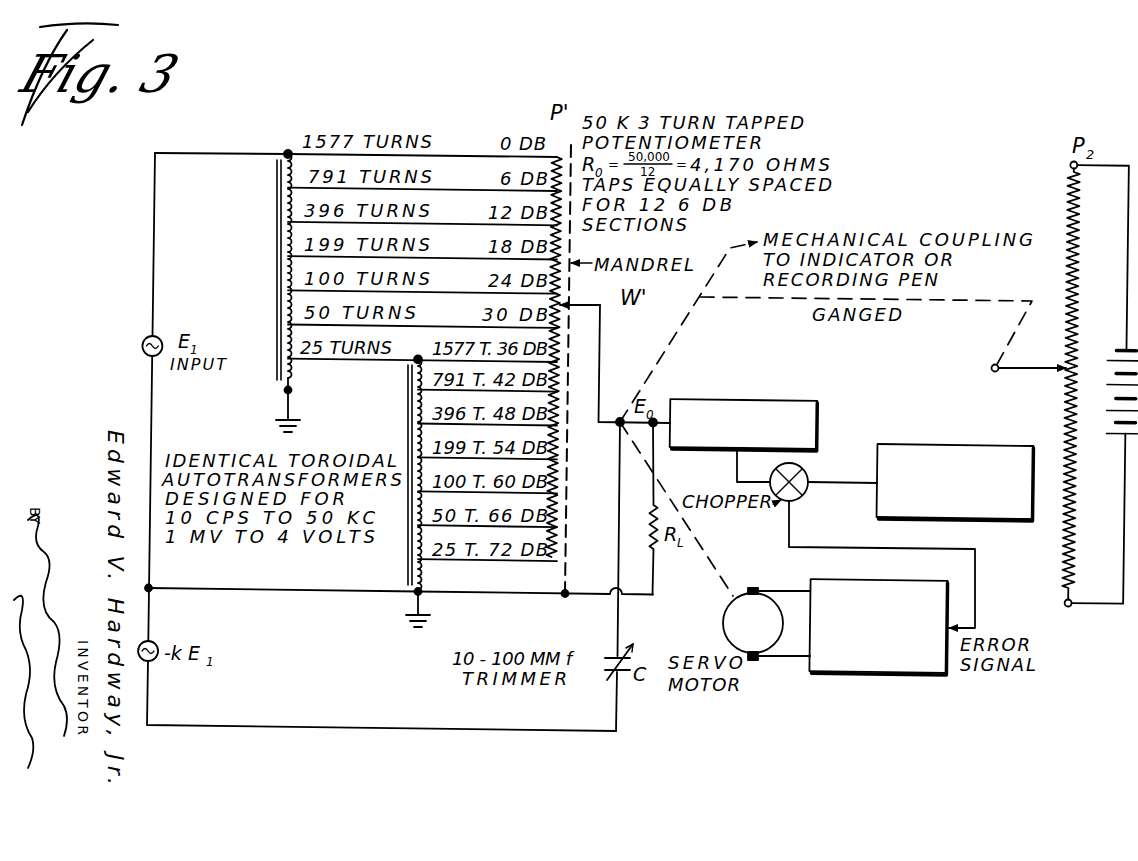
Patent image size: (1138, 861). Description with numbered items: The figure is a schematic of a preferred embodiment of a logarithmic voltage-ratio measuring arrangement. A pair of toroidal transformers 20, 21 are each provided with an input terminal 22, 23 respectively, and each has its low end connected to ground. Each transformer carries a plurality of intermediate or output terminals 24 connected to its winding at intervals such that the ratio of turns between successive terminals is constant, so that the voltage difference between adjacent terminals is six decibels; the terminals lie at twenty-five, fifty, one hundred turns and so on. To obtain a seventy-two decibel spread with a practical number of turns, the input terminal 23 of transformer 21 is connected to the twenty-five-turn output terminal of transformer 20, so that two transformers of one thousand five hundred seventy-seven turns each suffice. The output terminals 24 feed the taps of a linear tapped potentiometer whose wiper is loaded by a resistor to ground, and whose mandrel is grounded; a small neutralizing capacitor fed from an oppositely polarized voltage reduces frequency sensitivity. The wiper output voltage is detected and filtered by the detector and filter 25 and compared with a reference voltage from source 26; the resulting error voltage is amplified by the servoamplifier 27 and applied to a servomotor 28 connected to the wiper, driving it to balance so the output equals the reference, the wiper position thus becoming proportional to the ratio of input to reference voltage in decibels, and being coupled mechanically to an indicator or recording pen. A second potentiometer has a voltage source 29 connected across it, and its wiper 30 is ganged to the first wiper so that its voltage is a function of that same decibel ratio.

The toroidal transformer 20 is at (278, 271).
The toroidal transformer 21 is at (408, 436).
The input terminal 22 is at (286, 150).
The input terminal 23 is at (414, 358).
The intermediate or output terminals 24 is at (278, 210).
The detector and filter 25 is at (758, 401).
The reference voltage source 26 is at (952, 446).
The servoamplifier 27 is at (888, 674).
The servomotor 28 is at (724, 616).
The voltage source 29 is at (1108, 371).
The wiper 30 is at (1032, 369).